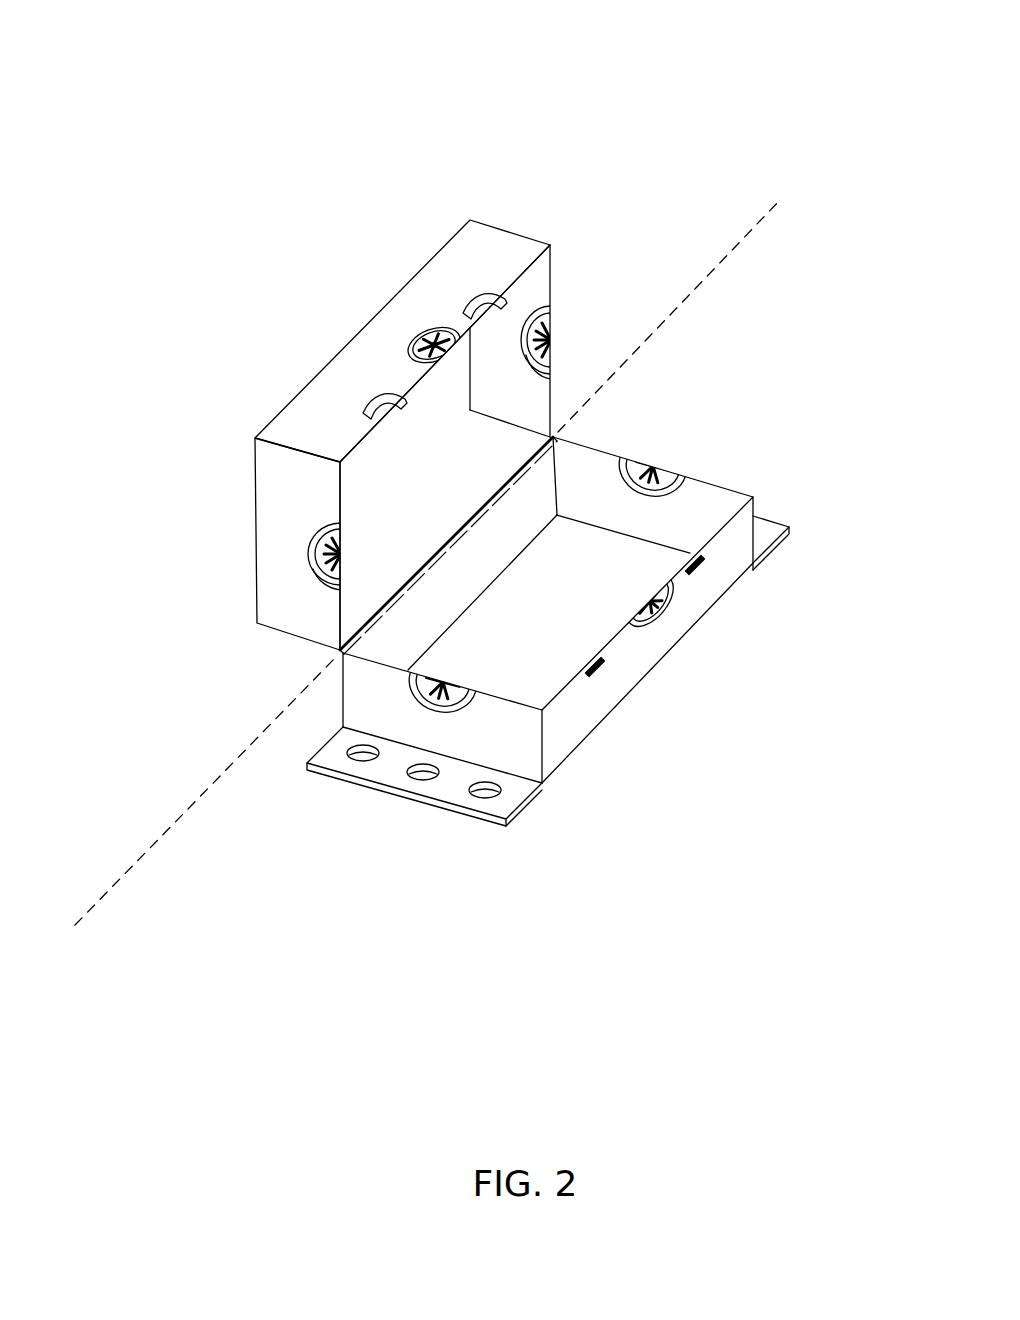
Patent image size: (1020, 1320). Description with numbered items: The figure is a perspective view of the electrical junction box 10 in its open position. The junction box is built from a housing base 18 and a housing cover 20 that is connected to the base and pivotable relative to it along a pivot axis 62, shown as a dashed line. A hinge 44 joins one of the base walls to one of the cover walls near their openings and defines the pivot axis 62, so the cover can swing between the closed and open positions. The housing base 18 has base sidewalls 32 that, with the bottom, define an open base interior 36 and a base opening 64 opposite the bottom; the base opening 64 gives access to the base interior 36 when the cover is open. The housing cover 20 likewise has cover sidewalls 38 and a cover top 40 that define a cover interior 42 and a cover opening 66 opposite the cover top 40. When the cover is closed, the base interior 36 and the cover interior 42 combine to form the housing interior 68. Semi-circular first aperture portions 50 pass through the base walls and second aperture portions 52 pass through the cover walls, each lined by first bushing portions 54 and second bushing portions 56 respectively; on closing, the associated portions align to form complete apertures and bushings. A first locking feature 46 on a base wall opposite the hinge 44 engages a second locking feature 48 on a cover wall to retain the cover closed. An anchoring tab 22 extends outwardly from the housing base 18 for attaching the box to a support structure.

The electrical junction box 10 is at (318, 156).
The housing base 18 is at (342, 690).
The housing cover 20 is at (280, 633).
The anchoring tab 22 is at (327, 775).
The base sidewalls 32 is at (483, 532).
The base interior 36 is at (589, 478).
The cover sidewalls 38 is at (299, 440).
The cover top 40 is at (341, 502).
The cover interior 42 is at (549, 264).
The hinge 44 is at (449, 570).
The first locking feature 46 is at (695, 568).
The second locking feature 48 is at (497, 313).
The first aperture portions 50 is at (687, 472).
The second aperture portions 52 is at (410, 355).
The first bushing portions 54 is at (637, 477).
The second bushing portions 56 is at (413, 343).
The pivot axis 62 is at (740, 245).
The base opening 64 is at (763, 482).
The cover opening 66 is at (358, 455).
The housing interior 68 is at (451, 480).